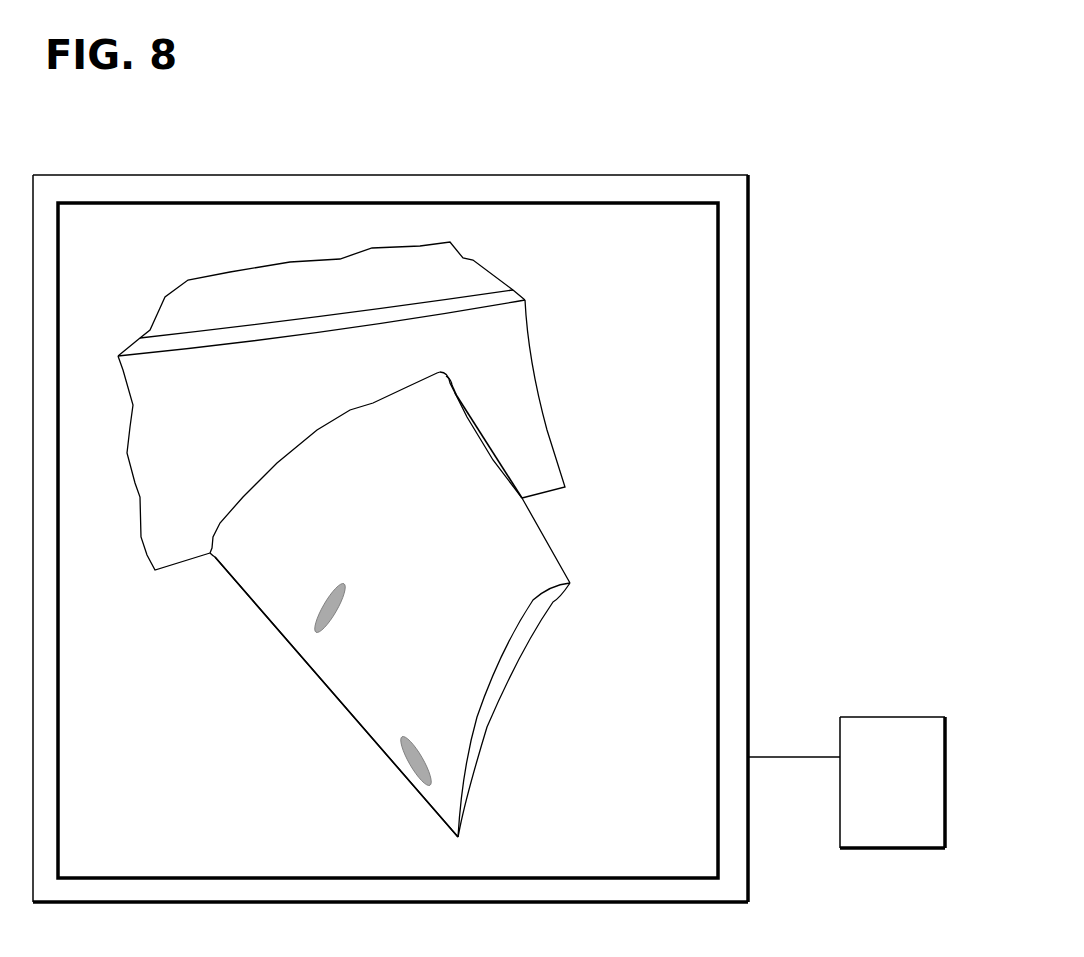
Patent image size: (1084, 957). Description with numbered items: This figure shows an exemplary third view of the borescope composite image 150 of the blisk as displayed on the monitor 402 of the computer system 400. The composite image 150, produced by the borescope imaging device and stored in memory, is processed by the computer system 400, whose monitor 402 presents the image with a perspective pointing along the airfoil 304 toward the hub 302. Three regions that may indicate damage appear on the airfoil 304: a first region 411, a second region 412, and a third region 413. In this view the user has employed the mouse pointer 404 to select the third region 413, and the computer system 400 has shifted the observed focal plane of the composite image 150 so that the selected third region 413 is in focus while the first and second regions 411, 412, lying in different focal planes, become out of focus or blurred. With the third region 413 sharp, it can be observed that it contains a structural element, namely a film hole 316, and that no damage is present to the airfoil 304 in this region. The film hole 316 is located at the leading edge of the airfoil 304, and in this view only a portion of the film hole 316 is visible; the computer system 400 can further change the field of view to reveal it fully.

The composite image 150 is at (128, 236).
The monitor 402 is at (732, 190).
The computer system 400 is at (915, 797).
The hub 302 is at (268, 389).
The airfoil 304 is at (440, 601).
The film hole 316 is at (460, 387).
The mouse pointer 404 is at (448, 403).
The first region 411 is at (413, 755).
The second region 412 is at (322, 622).
The third region 413 is at (452, 383).